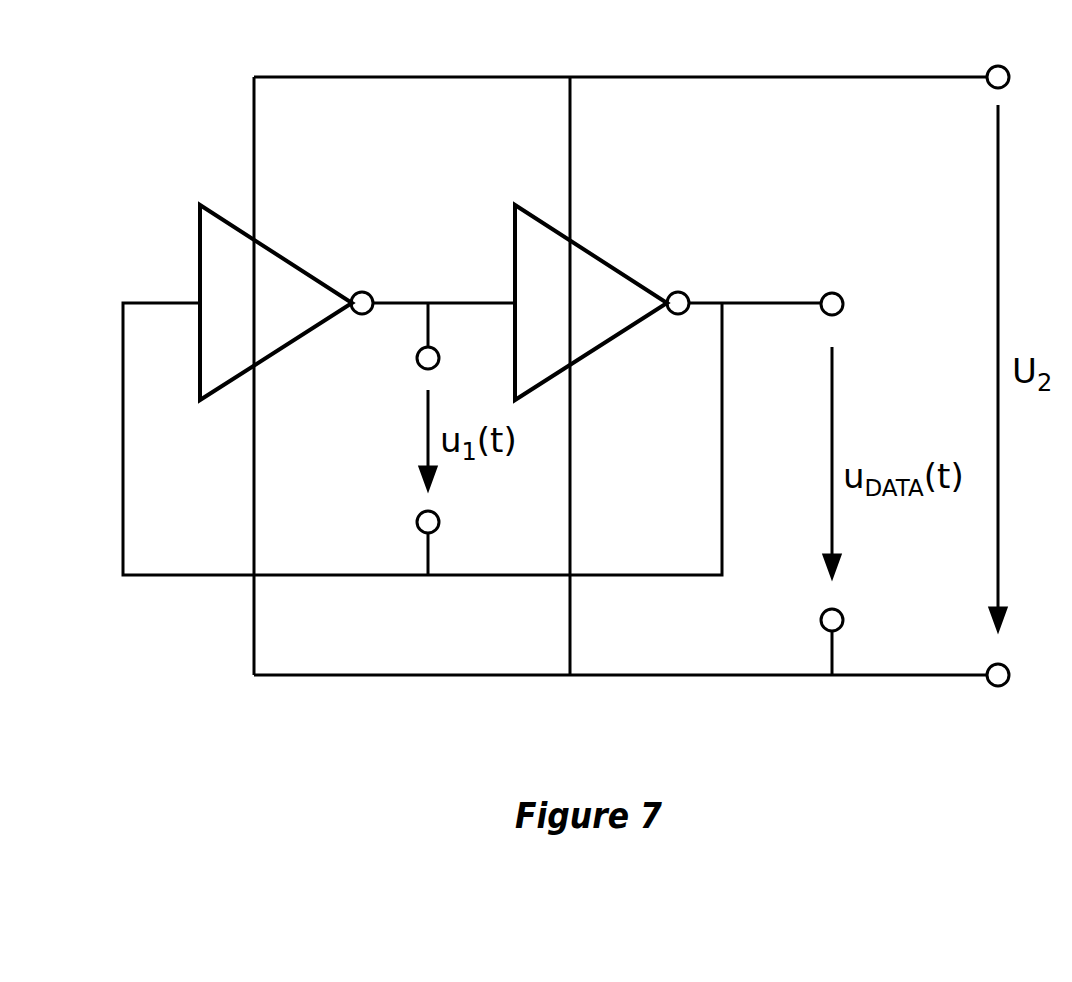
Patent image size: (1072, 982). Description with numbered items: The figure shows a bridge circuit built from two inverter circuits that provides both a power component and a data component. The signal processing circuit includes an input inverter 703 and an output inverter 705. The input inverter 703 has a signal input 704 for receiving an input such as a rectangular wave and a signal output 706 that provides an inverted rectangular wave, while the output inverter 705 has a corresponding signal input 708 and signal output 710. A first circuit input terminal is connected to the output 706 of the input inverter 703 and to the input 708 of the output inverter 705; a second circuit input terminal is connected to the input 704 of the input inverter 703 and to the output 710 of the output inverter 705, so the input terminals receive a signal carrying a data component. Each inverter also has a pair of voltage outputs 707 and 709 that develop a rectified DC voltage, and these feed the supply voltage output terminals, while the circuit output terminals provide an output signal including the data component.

The input inverter 703 is at (200, 235).
The signal input 704 is at (198, 305).
The output inverter 705 is at (645, 295).
The signal output 706 is at (372, 293).
The voltage outputs 707 is at (254, 237).
The signal input 708 is at (513, 302).
The voltage outputs 709 is at (572, 237).
The signal output 710 is at (690, 305).